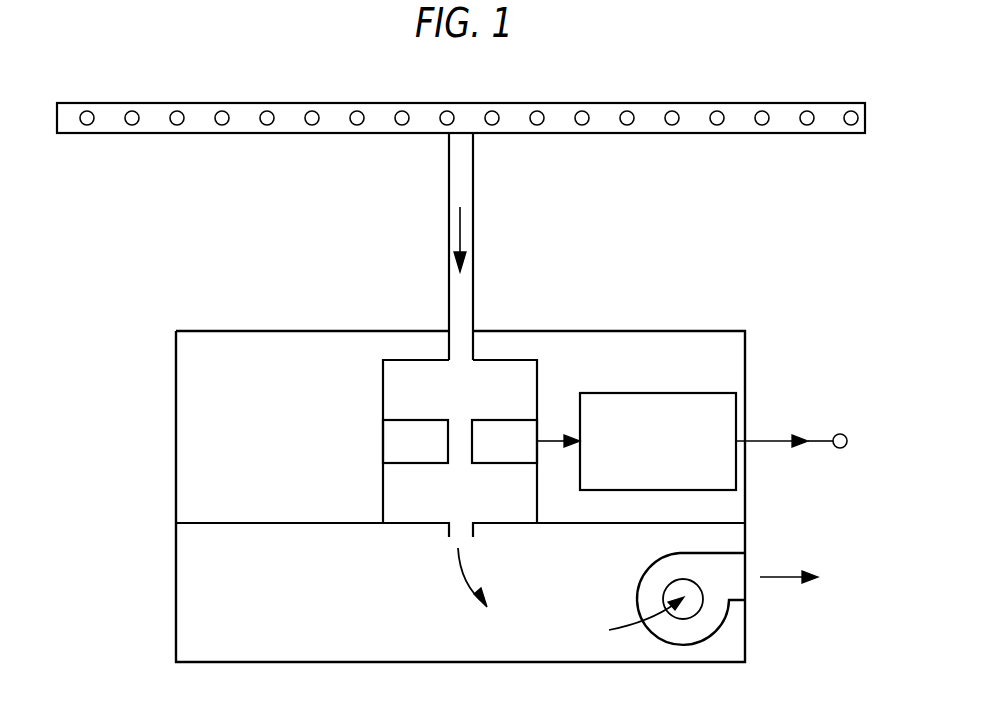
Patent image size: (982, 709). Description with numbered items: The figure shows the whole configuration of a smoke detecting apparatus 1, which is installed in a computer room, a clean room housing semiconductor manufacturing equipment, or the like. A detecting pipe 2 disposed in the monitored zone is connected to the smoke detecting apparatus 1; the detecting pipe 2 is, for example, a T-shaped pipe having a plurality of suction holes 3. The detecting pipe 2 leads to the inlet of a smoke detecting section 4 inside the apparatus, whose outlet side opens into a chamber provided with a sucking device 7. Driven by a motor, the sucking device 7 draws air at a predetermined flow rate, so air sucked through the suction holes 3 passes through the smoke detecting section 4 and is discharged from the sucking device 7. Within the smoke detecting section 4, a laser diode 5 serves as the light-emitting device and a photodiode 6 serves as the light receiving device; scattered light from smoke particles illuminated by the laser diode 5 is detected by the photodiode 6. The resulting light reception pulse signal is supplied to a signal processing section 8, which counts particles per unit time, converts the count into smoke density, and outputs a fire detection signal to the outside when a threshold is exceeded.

The smoke detecting apparatus 1 is at (221, 331).
The detecting pipe 2 is at (349, 103).
The suction holes 3 is at (87, 111).
The smoke detecting section 4 is at (383, 375).
The laser diode 5 is at (414, 420).
The photodiode 6 is at (503, 420).
The sucking device 7 is at (645, 584).
The signal processing section 8 is at (656, 393).